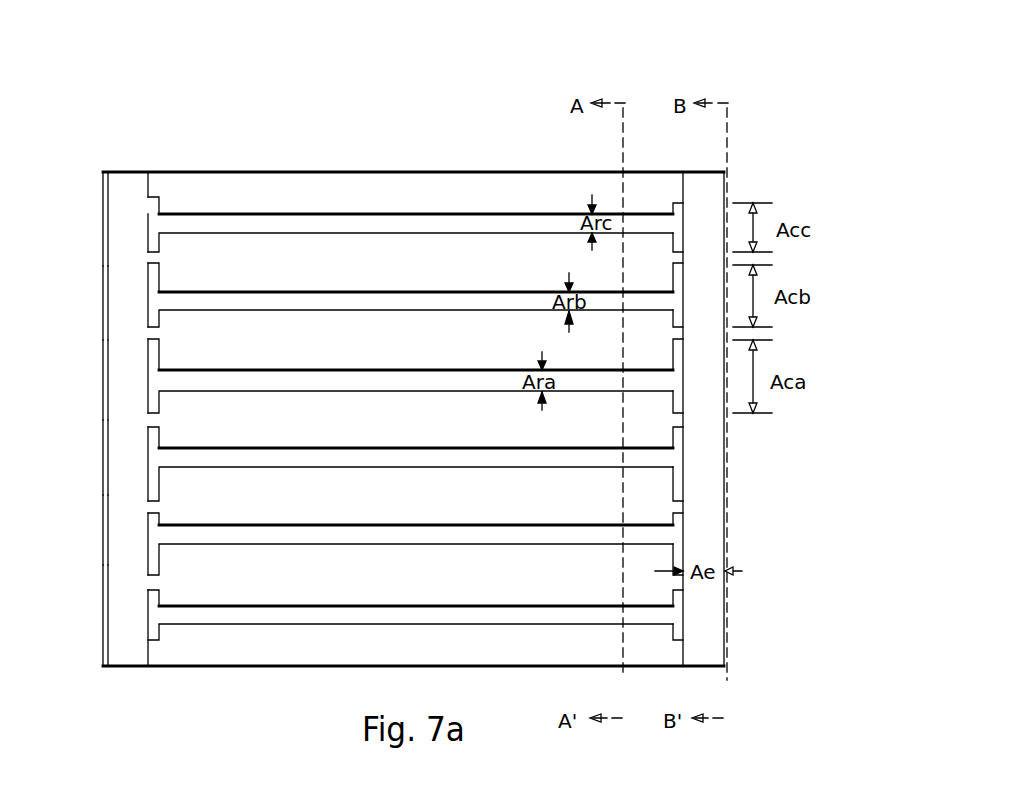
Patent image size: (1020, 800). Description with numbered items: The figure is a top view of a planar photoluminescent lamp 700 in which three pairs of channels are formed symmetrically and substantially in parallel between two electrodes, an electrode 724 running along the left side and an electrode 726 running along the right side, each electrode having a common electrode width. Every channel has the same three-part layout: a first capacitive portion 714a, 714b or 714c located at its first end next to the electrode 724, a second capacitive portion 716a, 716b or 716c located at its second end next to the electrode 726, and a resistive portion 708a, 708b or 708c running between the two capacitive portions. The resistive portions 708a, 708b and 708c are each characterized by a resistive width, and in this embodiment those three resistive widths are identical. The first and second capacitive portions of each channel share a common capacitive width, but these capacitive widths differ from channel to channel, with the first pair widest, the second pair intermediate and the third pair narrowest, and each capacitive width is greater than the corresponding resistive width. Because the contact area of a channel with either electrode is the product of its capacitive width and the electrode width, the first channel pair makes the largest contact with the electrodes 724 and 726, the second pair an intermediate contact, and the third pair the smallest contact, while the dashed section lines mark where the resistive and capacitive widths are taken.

The planar photoluminescent lamp 700 is at (289, 64).
The electrode 724 is at (128, 188).
The electrode 726 is at (712, 510).
The first capacitive portion 714a is at (150, 356).
The first capacitive portion 714b is at (155, 281).
The first capacitive portion 714c is at (154, 208).
The resistive portion 708a is at (486, 376).
The resistive portion 708b is at (432, 294).
The resistive portion 708c is at (376, 212).
The second capacitive portion 716a is at (727, 393).
The second capacitive portion 716b is at (727, 298).
The second capacitive portion 716c is at (727, 223).